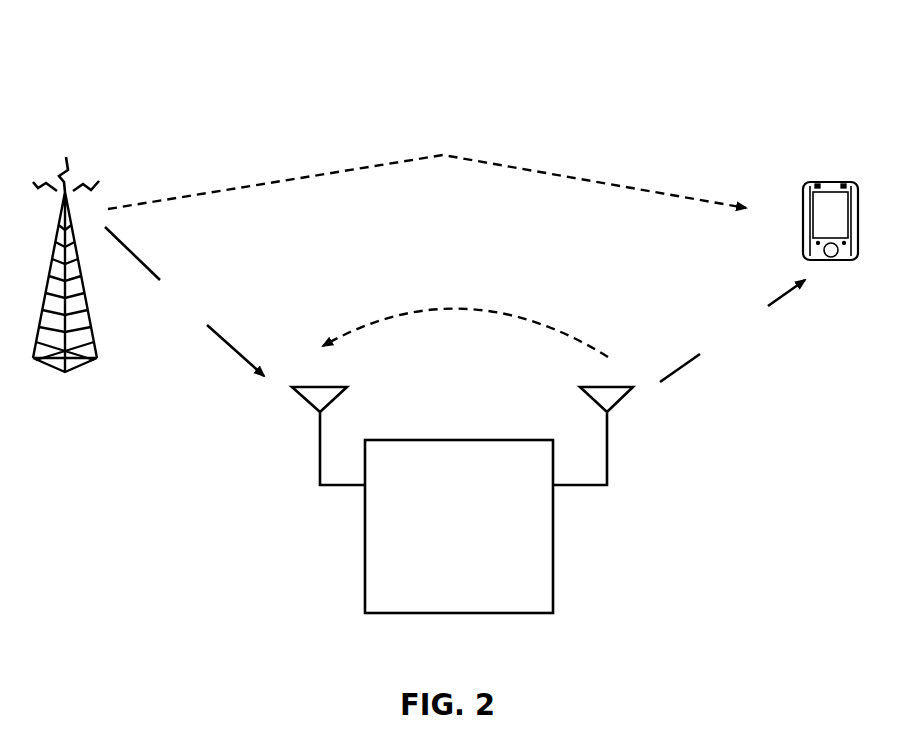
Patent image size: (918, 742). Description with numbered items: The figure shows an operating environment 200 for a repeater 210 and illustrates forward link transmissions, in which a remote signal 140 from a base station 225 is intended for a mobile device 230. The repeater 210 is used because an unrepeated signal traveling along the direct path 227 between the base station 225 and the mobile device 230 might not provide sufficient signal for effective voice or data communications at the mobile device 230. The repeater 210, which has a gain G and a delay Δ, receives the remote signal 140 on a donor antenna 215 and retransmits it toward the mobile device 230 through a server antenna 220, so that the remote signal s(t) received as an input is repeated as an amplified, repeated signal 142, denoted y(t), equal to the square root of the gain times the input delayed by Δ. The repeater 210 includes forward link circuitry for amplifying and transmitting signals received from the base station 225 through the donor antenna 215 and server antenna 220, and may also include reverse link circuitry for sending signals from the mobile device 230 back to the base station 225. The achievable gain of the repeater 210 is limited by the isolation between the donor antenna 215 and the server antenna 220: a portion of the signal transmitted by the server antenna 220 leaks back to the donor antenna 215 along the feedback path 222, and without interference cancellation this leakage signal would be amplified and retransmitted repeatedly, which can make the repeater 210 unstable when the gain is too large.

The operating environment 200 is at (741, 78).
The base station 225 is at (80, 366).
The remote signal 140 is at (150, 268).
The path 227 is at (565, 175).
The mobile device 230 is at (822, 182).
The repeated signal 142 is at (772, 302).
The feedback path 222 is at (495, 312).
The donor antenna 215 is at (335, 394).
The server antenna 220 is at (585, 393).
The repeater 210 is at (480, 613).